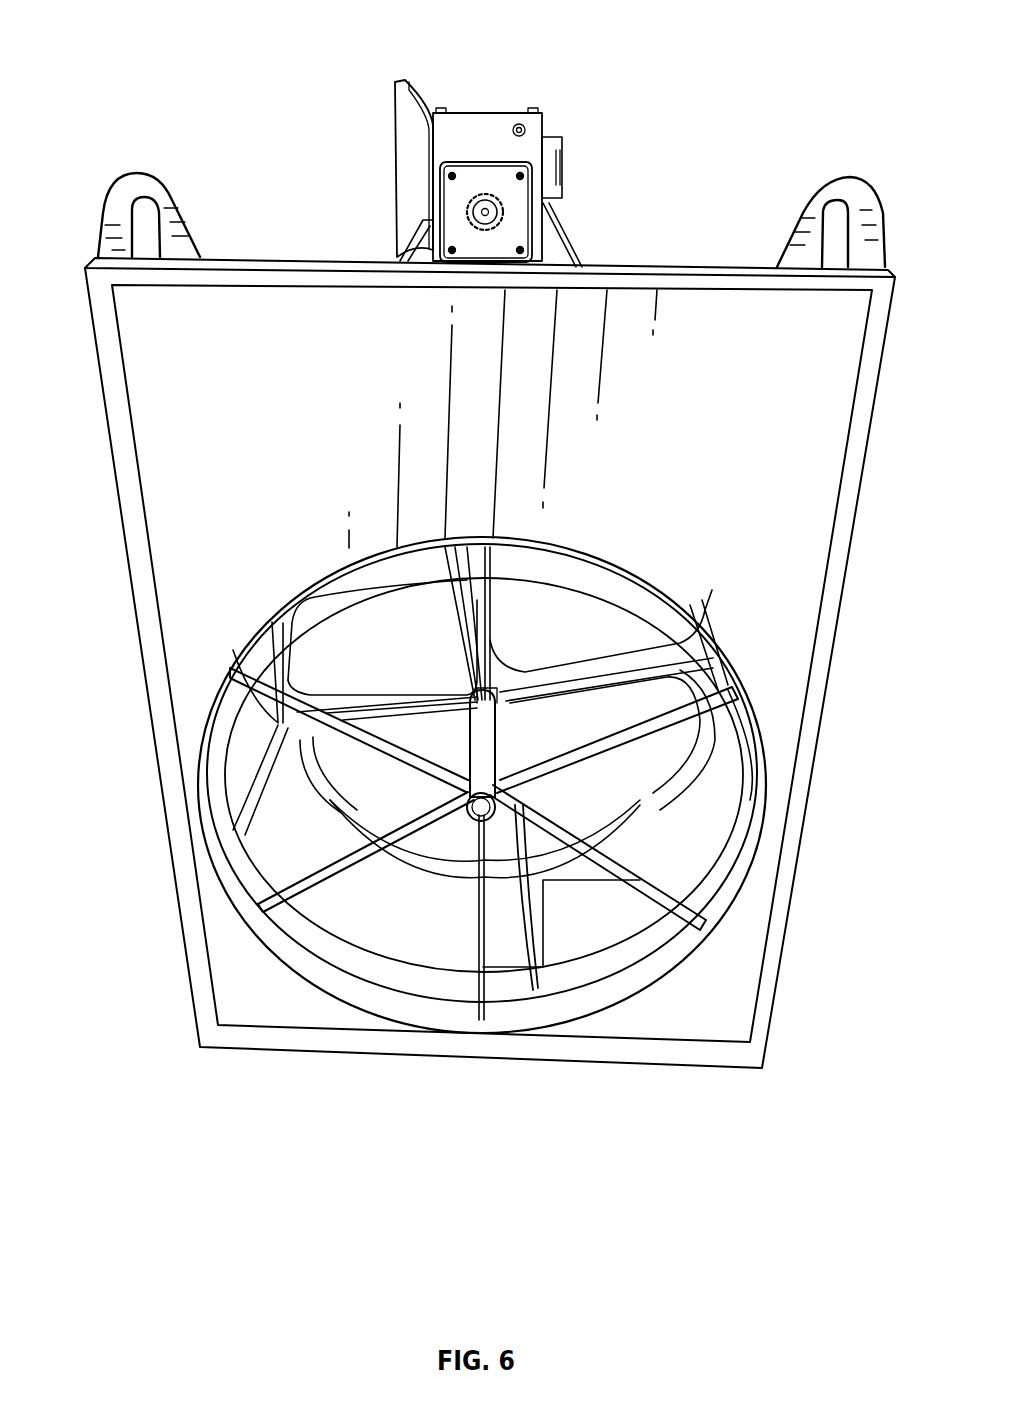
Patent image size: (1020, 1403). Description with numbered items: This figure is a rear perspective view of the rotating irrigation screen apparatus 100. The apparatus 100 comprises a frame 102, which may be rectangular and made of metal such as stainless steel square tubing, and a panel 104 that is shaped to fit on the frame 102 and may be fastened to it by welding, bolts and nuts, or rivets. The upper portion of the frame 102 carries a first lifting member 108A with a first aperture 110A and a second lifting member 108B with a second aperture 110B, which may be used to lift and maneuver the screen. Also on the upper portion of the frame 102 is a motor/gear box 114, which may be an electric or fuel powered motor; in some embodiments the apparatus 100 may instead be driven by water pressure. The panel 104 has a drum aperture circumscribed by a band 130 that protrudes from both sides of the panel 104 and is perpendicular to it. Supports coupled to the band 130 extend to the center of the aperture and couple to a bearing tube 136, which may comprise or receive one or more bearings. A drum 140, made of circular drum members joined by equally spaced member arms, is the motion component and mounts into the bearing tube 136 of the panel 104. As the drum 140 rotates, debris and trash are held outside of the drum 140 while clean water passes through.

The rotating irrigation screen apparatus 100 is at (786, 36).
The frame 102 is at (838, 566).
The panel 104 is at (255, 462).
The first lifting member 108A is at (870, 247).
The second lifting member 108B is at (122, 232).
The first aperture 110A is at (840, 225).
The second aperture 110B is at (140, 232).
The motor/gear box 114 is at (498, 126).
The band 130 is at (745, 862).
The bearing tube 136 is at (492, 745).
The drum 140 is at (257, 862).